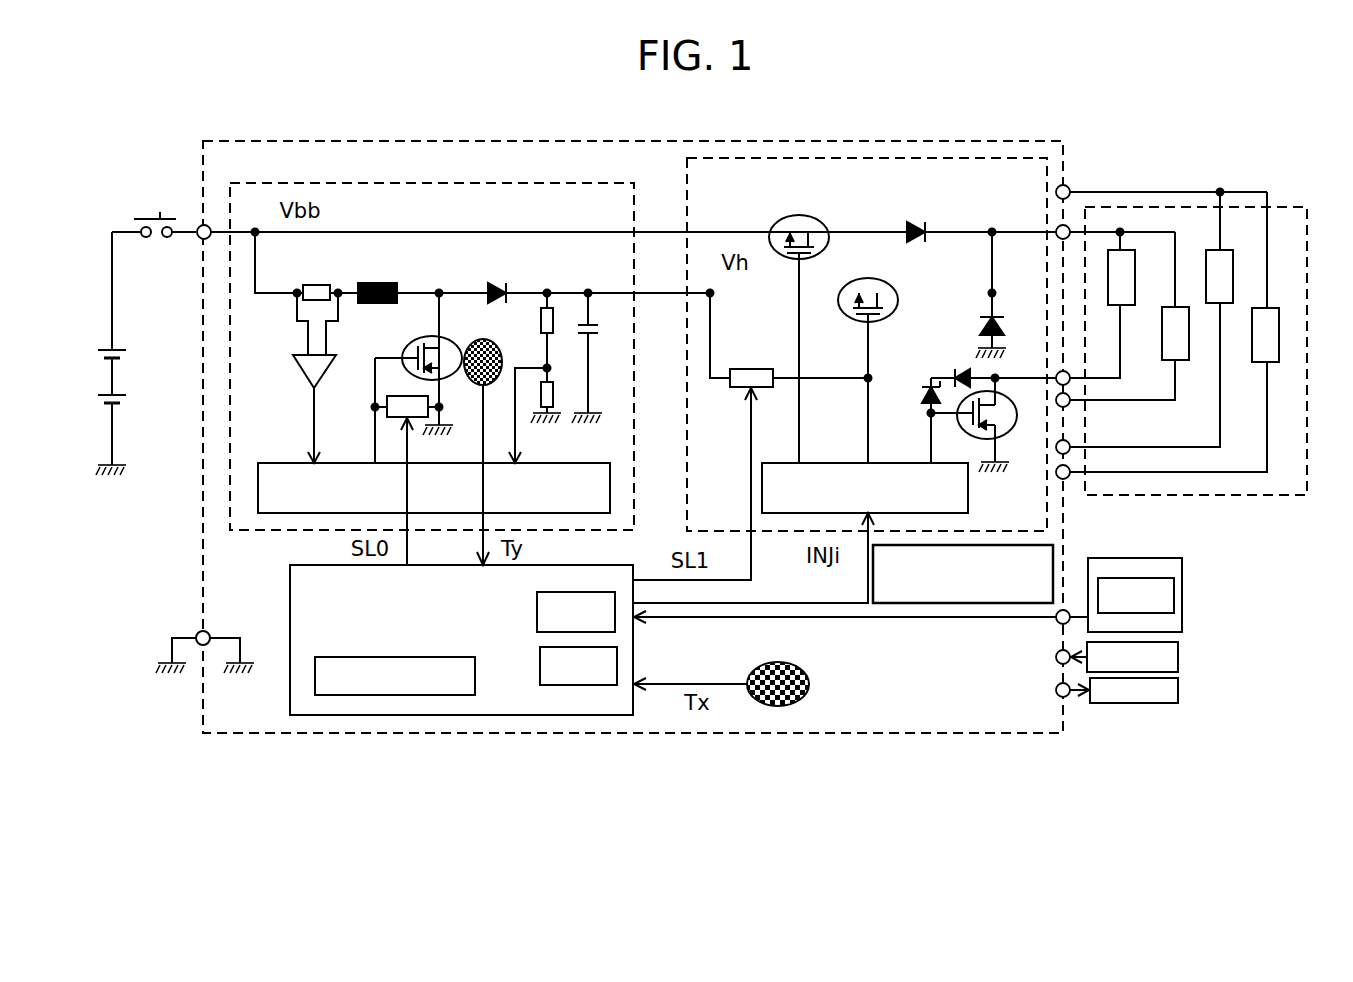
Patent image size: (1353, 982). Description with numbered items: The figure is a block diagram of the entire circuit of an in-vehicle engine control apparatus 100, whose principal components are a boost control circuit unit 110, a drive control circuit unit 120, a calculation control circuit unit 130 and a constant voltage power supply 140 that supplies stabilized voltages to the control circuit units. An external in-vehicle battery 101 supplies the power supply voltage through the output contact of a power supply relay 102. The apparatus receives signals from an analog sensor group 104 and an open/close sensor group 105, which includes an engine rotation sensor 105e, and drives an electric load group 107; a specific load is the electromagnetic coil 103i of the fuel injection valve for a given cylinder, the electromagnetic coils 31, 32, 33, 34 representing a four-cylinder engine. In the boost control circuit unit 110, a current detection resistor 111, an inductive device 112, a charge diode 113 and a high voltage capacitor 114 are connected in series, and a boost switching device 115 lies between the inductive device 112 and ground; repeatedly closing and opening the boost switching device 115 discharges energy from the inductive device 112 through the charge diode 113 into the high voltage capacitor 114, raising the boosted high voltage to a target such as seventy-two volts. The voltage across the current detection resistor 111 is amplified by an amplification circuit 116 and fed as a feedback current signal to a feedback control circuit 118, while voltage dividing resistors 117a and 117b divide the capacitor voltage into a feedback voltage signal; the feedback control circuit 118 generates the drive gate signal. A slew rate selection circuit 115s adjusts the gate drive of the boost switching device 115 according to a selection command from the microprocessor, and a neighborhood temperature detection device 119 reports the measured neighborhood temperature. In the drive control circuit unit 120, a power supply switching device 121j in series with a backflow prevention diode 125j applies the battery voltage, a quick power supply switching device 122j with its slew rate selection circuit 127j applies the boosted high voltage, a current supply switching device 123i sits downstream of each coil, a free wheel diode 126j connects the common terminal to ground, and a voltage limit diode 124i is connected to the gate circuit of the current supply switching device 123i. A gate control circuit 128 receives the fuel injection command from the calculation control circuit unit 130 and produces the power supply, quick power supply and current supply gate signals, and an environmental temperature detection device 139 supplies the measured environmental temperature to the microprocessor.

The in-vehicle engine control apparatus 100 is at (203, 567).
The in-vehicle battery 101 is at (124, 358).
The power supply relay 102 is at (160, 212).
The electromagnetic coil 103i is at (1188, 369).
The analog sensor group 104 is at (1178, 652).
The open/close sensor group 105 is at (1126, 575).
The engine rotation sensor 105e is at (1136, 595).
The electric load group 107 is at (1178, 692).
The boost control circuit unit 110 is at (475, 183).
The current detection resistor 111 is at (318, 285).
The inductive device 112 is at (385, 283).
The charge diode 113 is at (490, 287).
The high voltage capacitor 114 is at (592, 325).
The boost switching device 115 is at (412, 345).
The slew rate selection circuit 115s is at (393, 396).
The amplification circuit 116 is at (300, 370).
The voltage dividing resistor 117a is at (541, 320).
The voltage dividing resistor 117b is at (553, 395).
The feedback control circuit 118 is at (278, 463).
The neighborhood temperature detection device 119 is at (512, 345).
The drive control circuit unit 120 is at (687, 200).
The power supply switching device 121j is at (822, 225).
The quick power supply switching device 122j is at (845, 318).
The current supply switching device 123i is at (1003, 438).
The voltage limit diode 124i is at (922, 390).
The backflow prevention diode 125j is at (912, 222).
The free wheel diode 126j is at (980, 328).
The slew rate selection circuit 127j is at (738, 369).
The gate control circuit 128 is at (840, 463).
The calculation control circuit unit 130 is at (290, 617).
The environmental temperature detection device 139 is at (808, 672).
The constant voltage power supply 140 is at (970, 603).
The electromagnetic coil 31 is at (1135, 283).
The electromagnetic coil 32 is at (1252, 345).
The electromagnetic coil 33 is at (1233, 275).
The electromagnetic coil 34 is at (1162, 335).